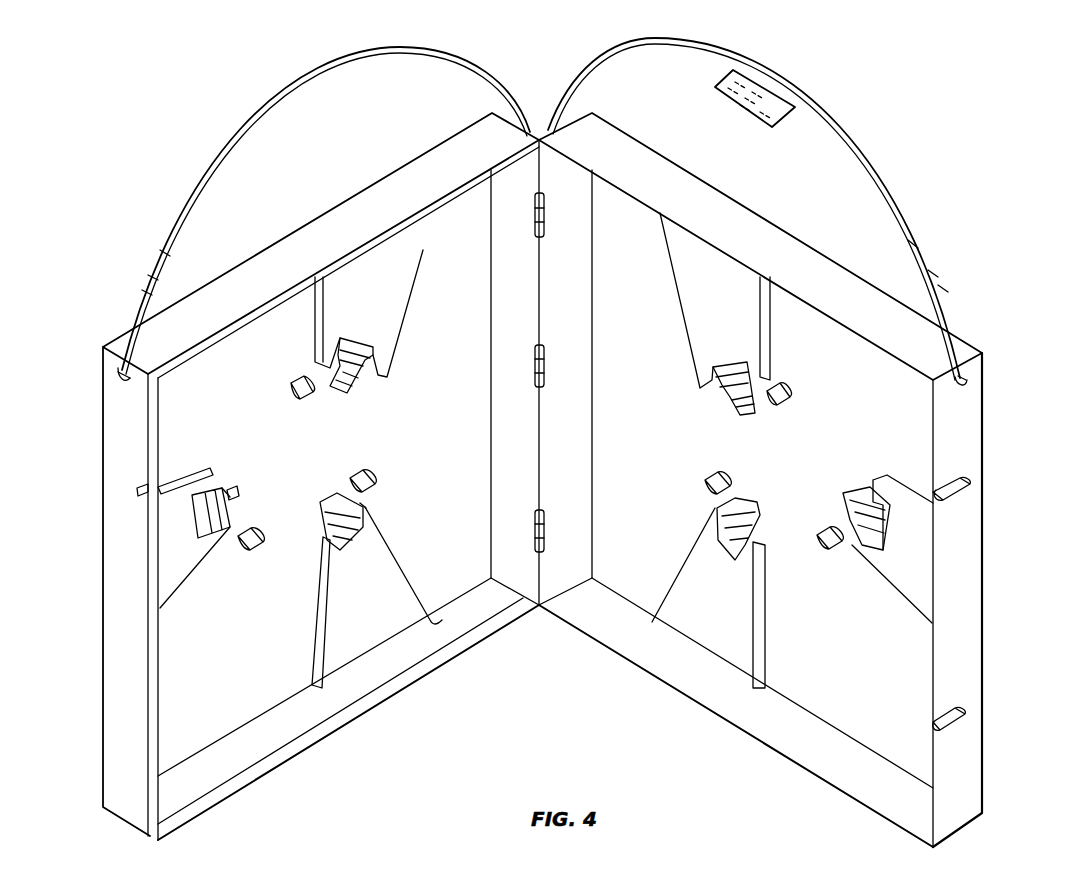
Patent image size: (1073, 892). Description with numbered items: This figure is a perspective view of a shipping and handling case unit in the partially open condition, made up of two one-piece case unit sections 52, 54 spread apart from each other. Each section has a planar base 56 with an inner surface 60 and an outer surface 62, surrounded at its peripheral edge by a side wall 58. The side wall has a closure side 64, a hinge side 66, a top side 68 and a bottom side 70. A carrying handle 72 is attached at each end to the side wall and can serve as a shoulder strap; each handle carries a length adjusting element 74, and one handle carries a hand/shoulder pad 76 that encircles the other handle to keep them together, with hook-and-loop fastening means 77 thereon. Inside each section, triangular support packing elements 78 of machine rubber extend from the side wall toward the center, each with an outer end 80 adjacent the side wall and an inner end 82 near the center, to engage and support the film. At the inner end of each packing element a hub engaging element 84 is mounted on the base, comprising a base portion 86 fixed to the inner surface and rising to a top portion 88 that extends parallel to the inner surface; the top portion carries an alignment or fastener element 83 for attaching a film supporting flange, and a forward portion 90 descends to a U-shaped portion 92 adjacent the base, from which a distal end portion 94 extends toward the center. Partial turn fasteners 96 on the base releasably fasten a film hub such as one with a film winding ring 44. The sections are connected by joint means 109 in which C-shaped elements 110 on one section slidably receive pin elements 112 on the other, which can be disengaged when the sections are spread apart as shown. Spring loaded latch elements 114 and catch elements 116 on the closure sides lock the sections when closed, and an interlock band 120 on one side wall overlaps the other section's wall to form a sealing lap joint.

The film winding ring 44 is at (962, 490).
The case unit section 52 is at (956, 788).
The case unit section 54 is at (492, 60).
The planar base 56 is at (840, 644).
The side wall 58 is at (953, 617).
The inner surface 60 is at (497, 585).
The outer surface 62 is at (390, 182).
The closure side 64 is at (985, 589).
The hinge side 66 is at (508, 328).
The top side 68 is at (640, 166).
The bottom side 70 is at (790, 745).
The carrying handle 72 is at (290, 100).
The length adjusting element 74 is at (162, 270).
The hand/shoulder pad 76 is at (785, 98).
The hook-and-loop fastening means 77 is at (752, 88).
The triangular support packing element 78 is at (347, 309).
The outer end 80 is at (440, 600).
The inner end 82 is at (366, 505).
The alignment or fastener element 83 is at (364, 372).
The hub engaging element 84 is at (231, 524).
The base portion 86 is at (214, 472).
The top portion 88 is at (226, 490).
The forward portion 90 is at (342, 500).
The U-shaped portion 92 is at (236, 499).
The distal end portion 94 is at (240, 490).
The fastener 96 is at (733, 478).
The joint means 109 is at (549, 221).
The C-shaped element 110 is at (545, 522).
The pin element 112 is at (547, 541).
The latch element 114 is at (962, 725).
The catch element 116 is at (140, 710).
The interlock band 120 is at (312, 742).